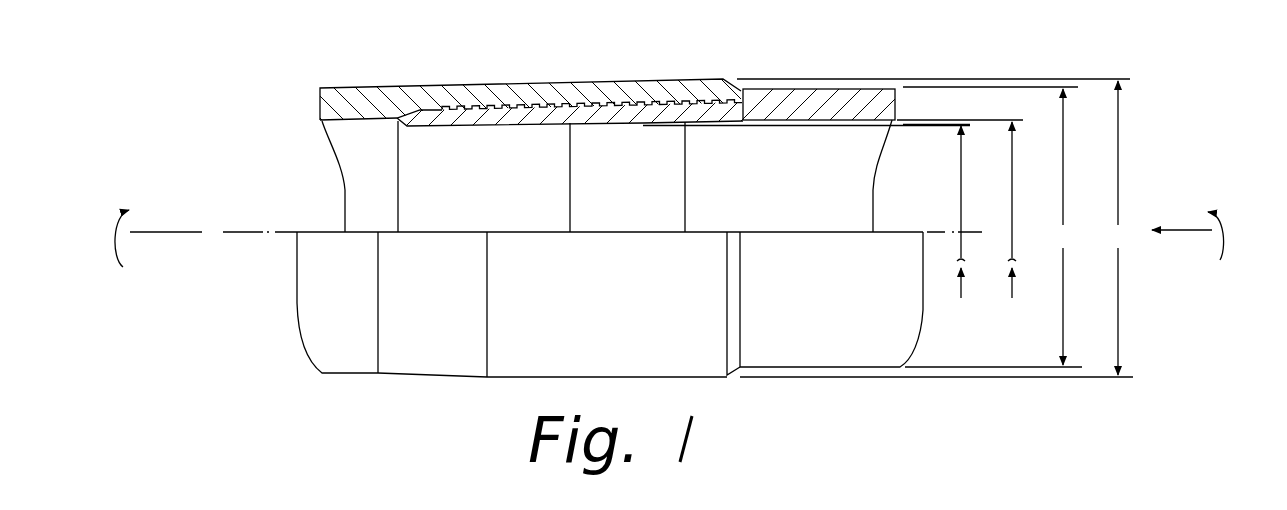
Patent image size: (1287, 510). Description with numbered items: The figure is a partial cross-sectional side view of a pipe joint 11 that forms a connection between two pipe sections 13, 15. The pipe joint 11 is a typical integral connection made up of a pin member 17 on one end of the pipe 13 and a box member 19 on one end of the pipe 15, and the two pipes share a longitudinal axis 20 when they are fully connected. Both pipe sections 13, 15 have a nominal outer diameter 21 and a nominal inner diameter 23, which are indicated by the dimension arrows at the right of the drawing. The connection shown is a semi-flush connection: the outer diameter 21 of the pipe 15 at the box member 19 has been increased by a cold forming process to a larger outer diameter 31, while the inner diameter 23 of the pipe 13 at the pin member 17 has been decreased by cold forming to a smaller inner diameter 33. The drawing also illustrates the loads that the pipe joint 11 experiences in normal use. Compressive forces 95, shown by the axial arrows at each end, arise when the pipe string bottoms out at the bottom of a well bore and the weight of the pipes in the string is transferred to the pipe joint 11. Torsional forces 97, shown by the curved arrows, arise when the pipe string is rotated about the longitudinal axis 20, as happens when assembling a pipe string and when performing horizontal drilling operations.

The pipe joint 11 is at (426, 58).
The pipe section 13 is at (837, 88).
The pipe section 15 is at (335, 152).
The pin member 17 is at (613, 112).
The box member 19 is at (348, 88).
The longitudinal axis 20 is at (260, 233).
The nominal outer diameter 21 is at (993, 227).
The nominal inner diameter 23 is at (963, 209).
The outer diameter 31 is at (935, 228).
The inner diameter 33 is at (941, 212).
The compressive forces 95 is at (167, 232).
The torsional forces 97 is at (123, 267).